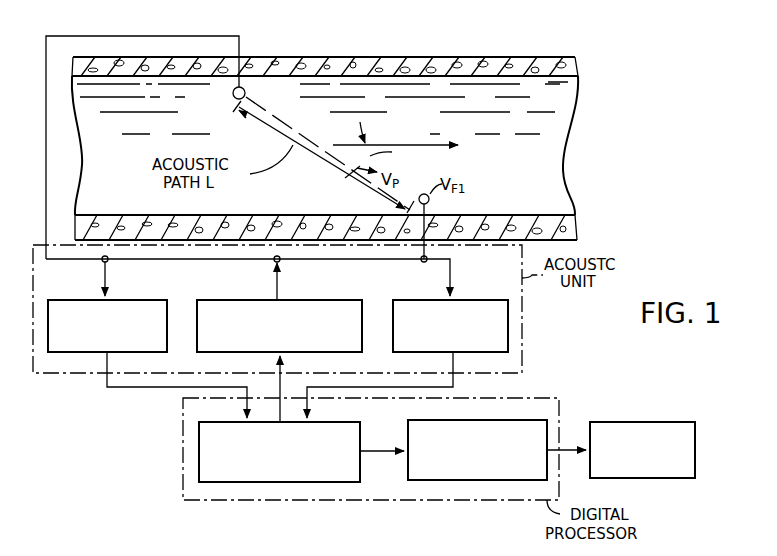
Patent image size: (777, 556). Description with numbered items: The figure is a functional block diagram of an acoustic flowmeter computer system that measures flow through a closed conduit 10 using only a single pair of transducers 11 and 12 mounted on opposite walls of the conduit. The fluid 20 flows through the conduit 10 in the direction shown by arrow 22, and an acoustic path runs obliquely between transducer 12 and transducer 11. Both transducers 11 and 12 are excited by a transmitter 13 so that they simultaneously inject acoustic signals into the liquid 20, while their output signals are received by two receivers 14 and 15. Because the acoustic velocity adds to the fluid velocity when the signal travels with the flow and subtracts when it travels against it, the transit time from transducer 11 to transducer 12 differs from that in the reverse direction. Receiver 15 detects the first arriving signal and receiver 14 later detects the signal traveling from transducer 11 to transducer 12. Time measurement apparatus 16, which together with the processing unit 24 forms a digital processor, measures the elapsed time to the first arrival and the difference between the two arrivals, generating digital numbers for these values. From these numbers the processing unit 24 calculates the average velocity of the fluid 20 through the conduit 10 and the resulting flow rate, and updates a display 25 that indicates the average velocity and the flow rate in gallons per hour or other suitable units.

The conduit 10 is at (343, 57).
The transducer 11 is at (430, 199).
The transducer 12 is at (233, 93).
The transmitter 13 is at (312, 300).
The receiver 14 is at (150, 300).
The receiver 15 is at (487, 300).
The time measurement apparatus 16 is at (199, 440).
The fluid 20 is at (576, 101).
The arrow 22 is at (413, 145).
The processing unit 24 is at (530, 420).
The display 25 is at (663, 422).